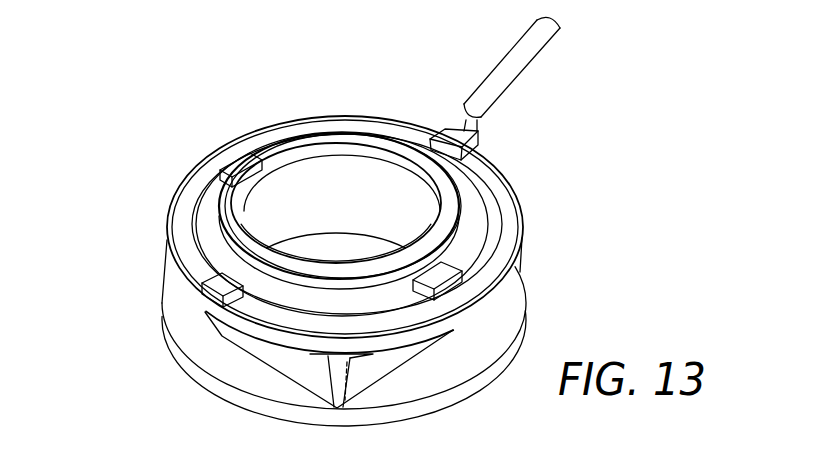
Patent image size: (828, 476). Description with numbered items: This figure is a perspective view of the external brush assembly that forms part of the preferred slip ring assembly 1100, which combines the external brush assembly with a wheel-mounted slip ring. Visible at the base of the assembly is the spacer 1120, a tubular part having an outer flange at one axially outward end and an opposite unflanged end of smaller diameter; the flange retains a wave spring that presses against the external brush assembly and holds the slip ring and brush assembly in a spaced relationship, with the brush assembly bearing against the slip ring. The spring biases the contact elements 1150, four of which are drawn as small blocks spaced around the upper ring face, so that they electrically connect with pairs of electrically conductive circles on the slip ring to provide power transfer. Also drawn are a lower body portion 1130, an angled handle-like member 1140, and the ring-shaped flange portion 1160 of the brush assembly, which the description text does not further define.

The slip ring assembly 1100 is at (345, 240).
The spacer 1120 is at (297, 412).
The wedge notch 1130 is at (405, 357).
The handle 1140 is at (527, 67).
The contact elements 1150 is at (236, 160).
The flange ring 1160 is at (522, 228).